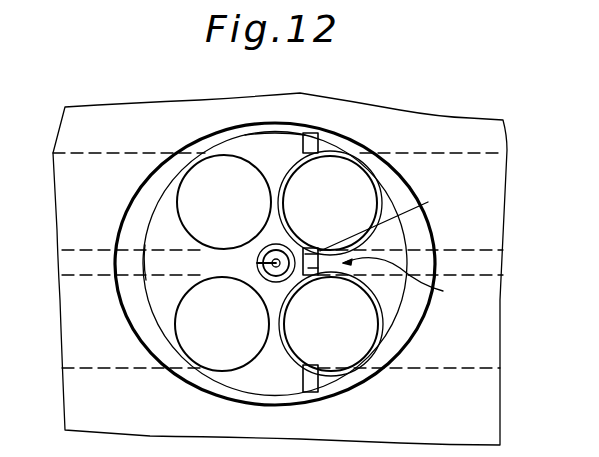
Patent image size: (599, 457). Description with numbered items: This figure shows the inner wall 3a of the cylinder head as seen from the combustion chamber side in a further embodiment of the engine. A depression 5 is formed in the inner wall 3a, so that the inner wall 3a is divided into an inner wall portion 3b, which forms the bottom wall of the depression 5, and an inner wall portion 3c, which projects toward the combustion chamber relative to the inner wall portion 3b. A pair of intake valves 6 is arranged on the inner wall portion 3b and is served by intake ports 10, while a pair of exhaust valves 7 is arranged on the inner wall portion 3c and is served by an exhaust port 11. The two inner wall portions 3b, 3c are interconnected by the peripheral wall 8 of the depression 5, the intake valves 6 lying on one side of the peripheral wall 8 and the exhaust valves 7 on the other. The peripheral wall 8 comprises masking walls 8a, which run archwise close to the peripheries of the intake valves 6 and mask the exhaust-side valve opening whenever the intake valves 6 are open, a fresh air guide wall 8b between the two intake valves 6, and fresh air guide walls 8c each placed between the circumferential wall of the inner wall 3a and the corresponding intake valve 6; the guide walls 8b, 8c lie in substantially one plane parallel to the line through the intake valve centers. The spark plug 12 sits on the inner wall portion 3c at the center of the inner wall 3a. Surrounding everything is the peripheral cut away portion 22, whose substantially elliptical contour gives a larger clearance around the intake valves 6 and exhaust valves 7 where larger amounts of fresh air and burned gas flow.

The peripheral cut away portion 22 is at (200, 137).
The inner wall 3a is at (272, 155).
The inner wall portion 3b is at (393, 242).
The inner wall portion 3c is at (158, 260).
The depression 5 is at (401, 283).
The intake valves 6 is at (362, 197).
The exhaust valves 7 is at (187, 190).
The peripheral wall 8 is at (318, 275).
The masking walls 8a is at (281, 197).
The fresh air guide wall 8b is at (389, 221).
The fresh air guide walls 8c is at (313, 147).
The intake ports 10 is at (453, 160).
The exhaust port 11 is at (93, 153).
The spark plug 12 is at (276, 282).